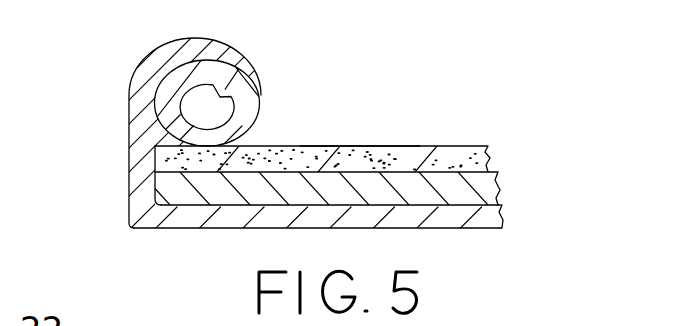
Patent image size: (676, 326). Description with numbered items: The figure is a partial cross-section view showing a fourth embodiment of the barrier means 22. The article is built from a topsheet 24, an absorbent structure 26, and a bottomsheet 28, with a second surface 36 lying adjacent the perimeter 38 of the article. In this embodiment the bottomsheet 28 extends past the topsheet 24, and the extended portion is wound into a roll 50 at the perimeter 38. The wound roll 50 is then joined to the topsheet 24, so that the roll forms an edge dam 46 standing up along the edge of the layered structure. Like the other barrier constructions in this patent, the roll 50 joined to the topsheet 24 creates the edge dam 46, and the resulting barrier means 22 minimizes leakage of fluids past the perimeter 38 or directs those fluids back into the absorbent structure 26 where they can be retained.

The barrier means 22 is at (110, 42).
The topsheet 24 is at (488, 152).
The absorbent structure 26 is at (498, 190).
The bottomsheet 28 is at (502, 216).
The second surface 36 is at (420, 146).
The perimeter 38 is at (155, 145).
The edge dam 46 is at (262, 108).
The roll 50 is at (253, 77).